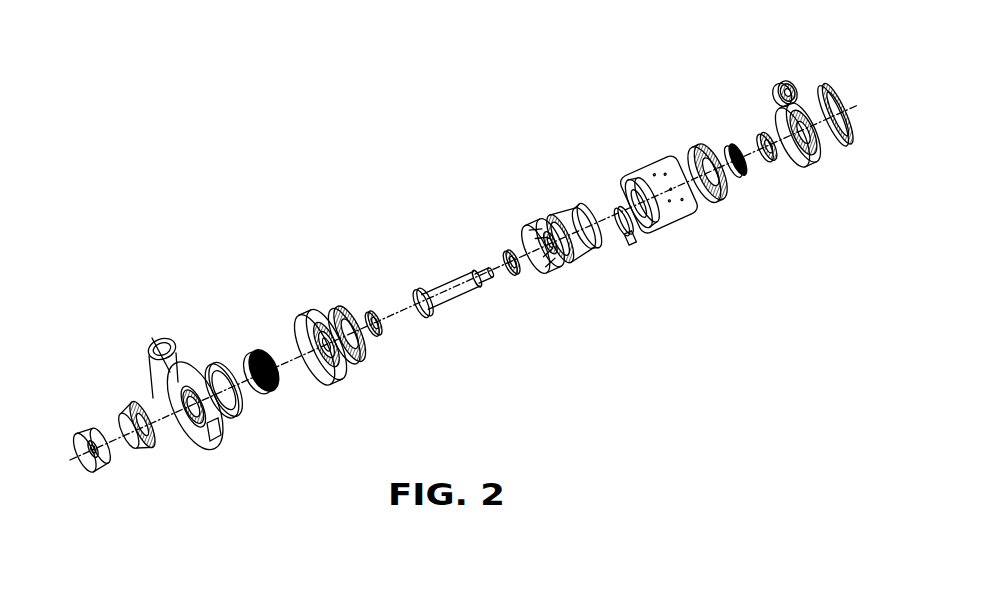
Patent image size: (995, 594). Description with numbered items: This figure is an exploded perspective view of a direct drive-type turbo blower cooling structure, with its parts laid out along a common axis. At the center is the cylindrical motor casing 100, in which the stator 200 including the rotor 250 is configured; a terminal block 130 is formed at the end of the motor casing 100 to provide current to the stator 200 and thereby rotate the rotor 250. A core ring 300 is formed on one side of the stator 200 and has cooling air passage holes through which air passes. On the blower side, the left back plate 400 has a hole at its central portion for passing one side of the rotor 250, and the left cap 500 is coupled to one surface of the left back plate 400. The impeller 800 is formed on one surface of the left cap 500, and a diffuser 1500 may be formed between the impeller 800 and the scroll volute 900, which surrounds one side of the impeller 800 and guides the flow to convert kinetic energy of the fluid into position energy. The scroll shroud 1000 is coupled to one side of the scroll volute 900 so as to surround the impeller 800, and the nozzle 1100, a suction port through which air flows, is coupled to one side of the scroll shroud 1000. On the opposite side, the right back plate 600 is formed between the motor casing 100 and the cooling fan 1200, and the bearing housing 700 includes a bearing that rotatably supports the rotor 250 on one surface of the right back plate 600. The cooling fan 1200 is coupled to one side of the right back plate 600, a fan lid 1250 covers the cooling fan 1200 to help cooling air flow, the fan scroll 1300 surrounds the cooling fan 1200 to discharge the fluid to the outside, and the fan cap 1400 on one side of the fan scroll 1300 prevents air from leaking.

The motor casing 100 is at (650, 165).
The terminal block 130 is at (614, 210).
The stator 200 is at (559, 212).
The rotor 250 is at (445, 282).
The core ring 300 is at (534, 222).
The left back plate 400 is at (337, 307).
The left cap 500 is at (301, 312).
The right back plate 600 is at (699, 147).
The bearing housing 700 is at (372, 311).
The impeller 800 is at (256, 352).
The scroll volute 900 is at (160, 345).
The scroll shroud 1000 is at (115, 412).
The nozzle 1100 is at (80, 428).
The cooling fan 1200 is at (733, 148).
The fan lid 1250 is at (760, 135).
The fan scroll 1300 is at (786, 80).
The fan cap 1400 is at (832, 86).
The diffuser 1500 is at (208, 363).